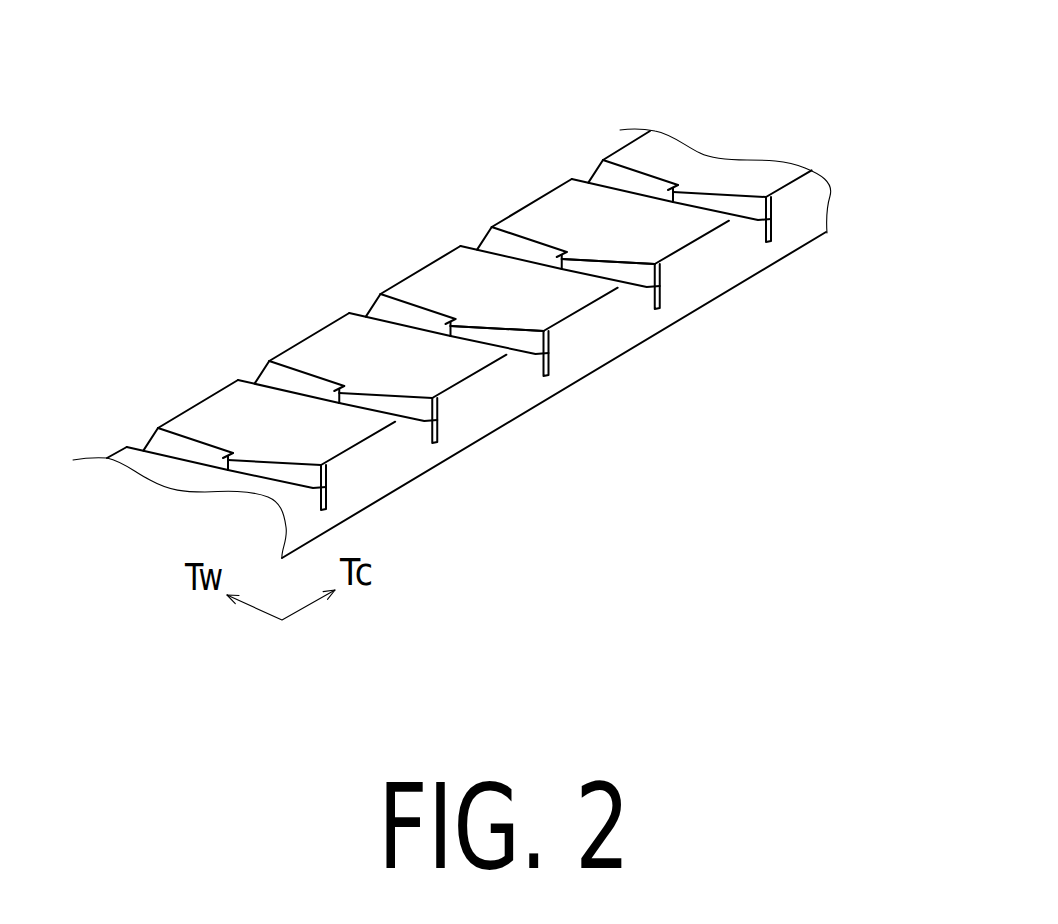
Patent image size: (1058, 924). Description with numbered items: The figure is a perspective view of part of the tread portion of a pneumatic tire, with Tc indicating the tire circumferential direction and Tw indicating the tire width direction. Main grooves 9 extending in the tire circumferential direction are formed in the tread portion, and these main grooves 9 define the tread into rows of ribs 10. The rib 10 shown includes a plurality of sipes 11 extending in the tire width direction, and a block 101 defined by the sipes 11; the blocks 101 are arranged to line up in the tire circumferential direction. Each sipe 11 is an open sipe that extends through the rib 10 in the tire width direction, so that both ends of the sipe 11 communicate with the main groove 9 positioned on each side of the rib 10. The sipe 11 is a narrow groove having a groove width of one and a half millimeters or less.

The main groove 9 is at (545, 186).
The rib 10 is at (496, 277).
The block 101 is at (492, 282).
The sipe 11 is at (612, 268).